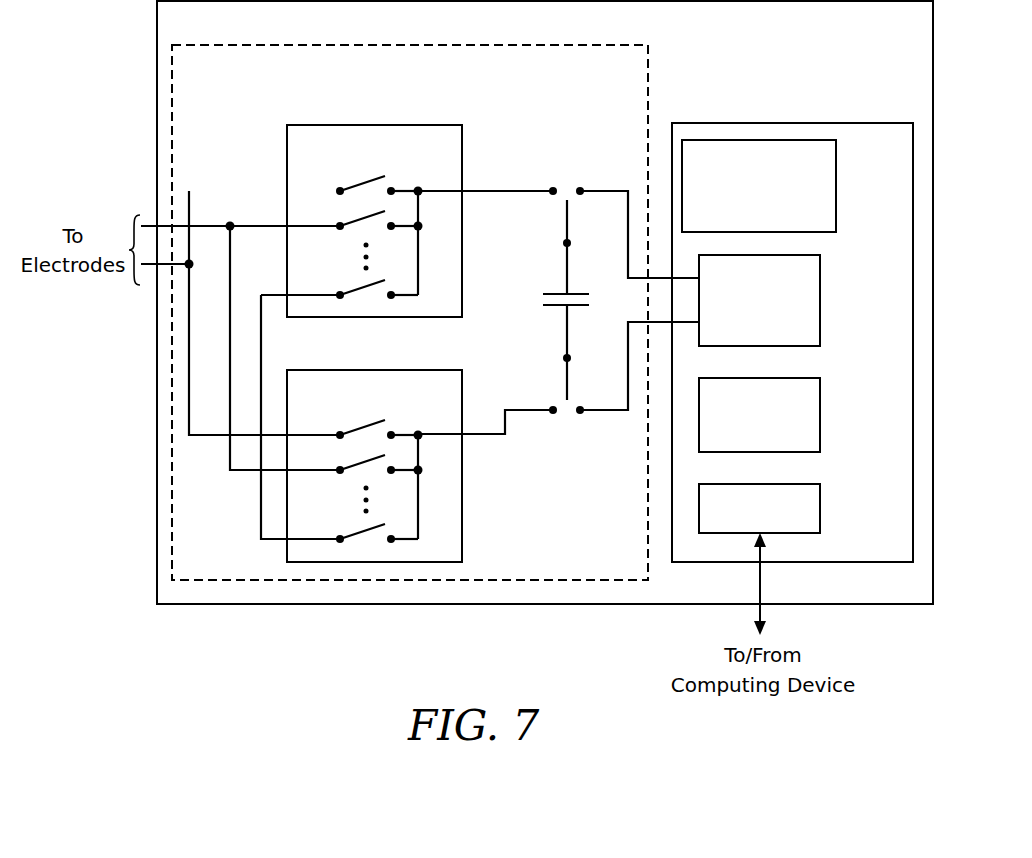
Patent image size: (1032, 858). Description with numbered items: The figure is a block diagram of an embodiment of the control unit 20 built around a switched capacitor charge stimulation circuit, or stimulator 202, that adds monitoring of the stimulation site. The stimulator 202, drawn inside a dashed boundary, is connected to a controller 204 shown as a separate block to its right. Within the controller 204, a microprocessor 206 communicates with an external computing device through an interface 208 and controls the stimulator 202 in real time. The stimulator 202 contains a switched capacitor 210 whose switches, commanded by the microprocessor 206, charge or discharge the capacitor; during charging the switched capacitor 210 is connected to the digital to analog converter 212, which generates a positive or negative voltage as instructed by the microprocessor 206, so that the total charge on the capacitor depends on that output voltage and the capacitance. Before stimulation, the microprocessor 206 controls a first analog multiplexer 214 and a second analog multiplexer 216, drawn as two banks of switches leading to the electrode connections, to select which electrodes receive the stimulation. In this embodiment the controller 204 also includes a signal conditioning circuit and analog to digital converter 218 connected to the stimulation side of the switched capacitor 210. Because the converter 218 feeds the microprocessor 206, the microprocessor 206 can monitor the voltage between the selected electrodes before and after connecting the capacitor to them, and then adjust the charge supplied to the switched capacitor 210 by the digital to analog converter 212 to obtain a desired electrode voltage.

The control unit 20 is at (110, 143).
The stimulator 202 is at (674, 91).
The controller 204 is at (792, 123).
The microprocessor 206 is at (820, 414).
The interface 208 is at (820, 510).
The switched capacitor 210 is at (524, 326).
The digital to analog converter 212 is at (820, 300).
The first analog multiplexer 214 is at (462, 157).
The second analog multiplexer 216 is at (462, 508).
The signal conditioning circuit and analog to digital converter 218 is at (836, 173).